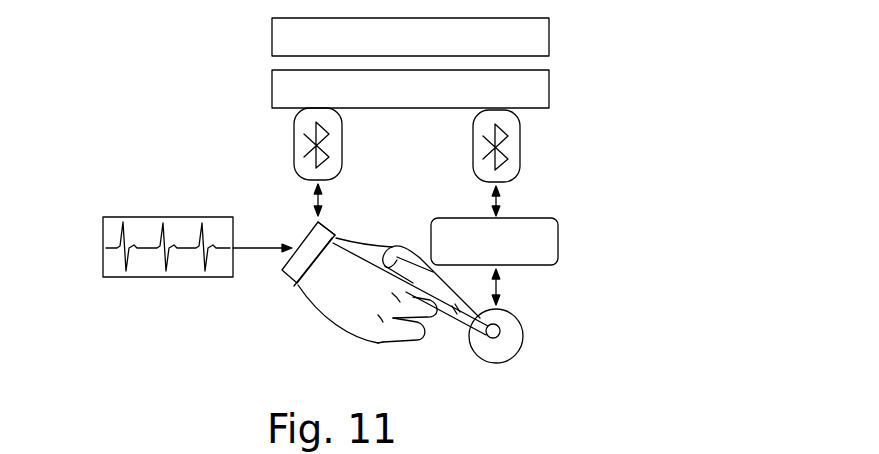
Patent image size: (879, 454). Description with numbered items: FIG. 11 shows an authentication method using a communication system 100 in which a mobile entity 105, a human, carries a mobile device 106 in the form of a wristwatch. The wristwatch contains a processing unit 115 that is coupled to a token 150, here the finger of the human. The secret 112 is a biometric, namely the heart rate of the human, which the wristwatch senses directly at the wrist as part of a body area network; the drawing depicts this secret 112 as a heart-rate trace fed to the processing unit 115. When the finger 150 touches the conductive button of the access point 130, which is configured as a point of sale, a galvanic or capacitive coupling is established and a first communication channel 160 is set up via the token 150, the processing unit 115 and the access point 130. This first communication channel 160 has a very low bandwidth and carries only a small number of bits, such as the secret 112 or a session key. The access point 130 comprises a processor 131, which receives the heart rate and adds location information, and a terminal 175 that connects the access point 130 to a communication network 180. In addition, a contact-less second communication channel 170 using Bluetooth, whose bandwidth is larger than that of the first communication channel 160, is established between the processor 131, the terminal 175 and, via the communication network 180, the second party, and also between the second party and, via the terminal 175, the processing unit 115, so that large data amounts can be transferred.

The communication system 100 is at (642, 147).
The mobile entity 105 is at (276, 287).
The mobile device 106 is at (299, 296).
The secret 112 is at (116, 200).
The processing unit 115 is at (336, 232).
The access point 130 is at (513, 342).
The processor 131 is at (535, 243).
The token 150 is at (449, 341).
The first communication channel 160 is at (392, 247).
The second communication channel 170 is at (283, 139).
The terminal 175 is at (533, 92).
The communication network 180 is at (533, 38).